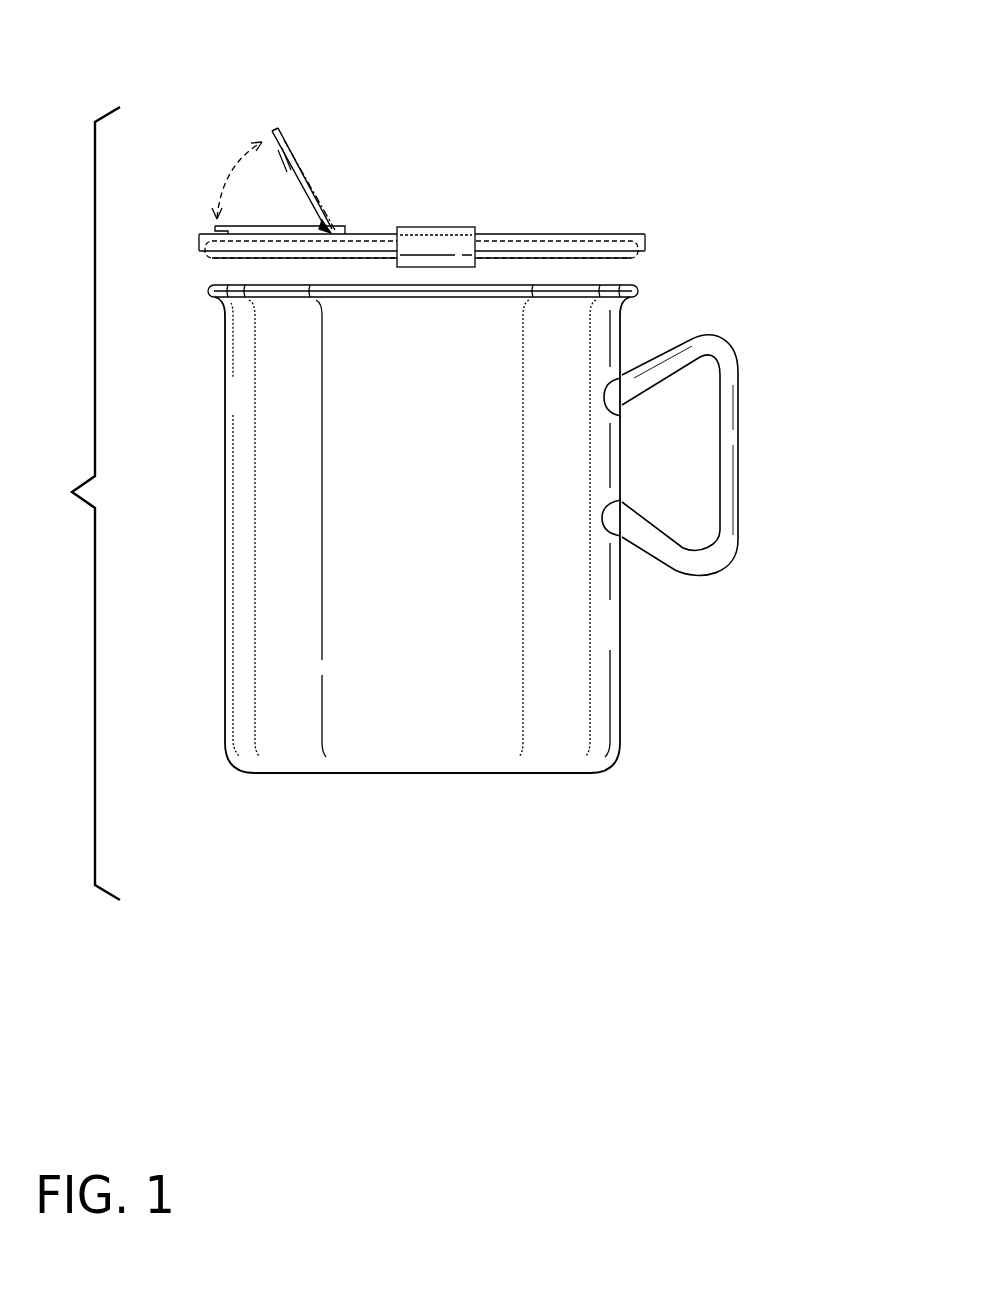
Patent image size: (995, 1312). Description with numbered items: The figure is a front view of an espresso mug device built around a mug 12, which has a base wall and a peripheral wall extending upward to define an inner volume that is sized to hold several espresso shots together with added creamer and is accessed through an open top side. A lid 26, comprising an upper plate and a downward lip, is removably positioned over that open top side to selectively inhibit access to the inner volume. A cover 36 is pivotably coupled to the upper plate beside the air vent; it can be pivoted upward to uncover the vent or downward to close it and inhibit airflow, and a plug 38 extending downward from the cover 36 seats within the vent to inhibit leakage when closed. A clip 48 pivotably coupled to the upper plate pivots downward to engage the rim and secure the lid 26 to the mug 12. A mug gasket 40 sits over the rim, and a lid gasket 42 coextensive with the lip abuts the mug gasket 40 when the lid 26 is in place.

The mug 12 is at (622, 641).
The lid 26 is at (529, 139).
The cover 36 is at (277, 130).
The plug 38 is at (278, 148).
The mug gasket 40 is at (636, 285).
The lid gasket 42 is at (632, 257).
The clip 48 is at (440, 229).